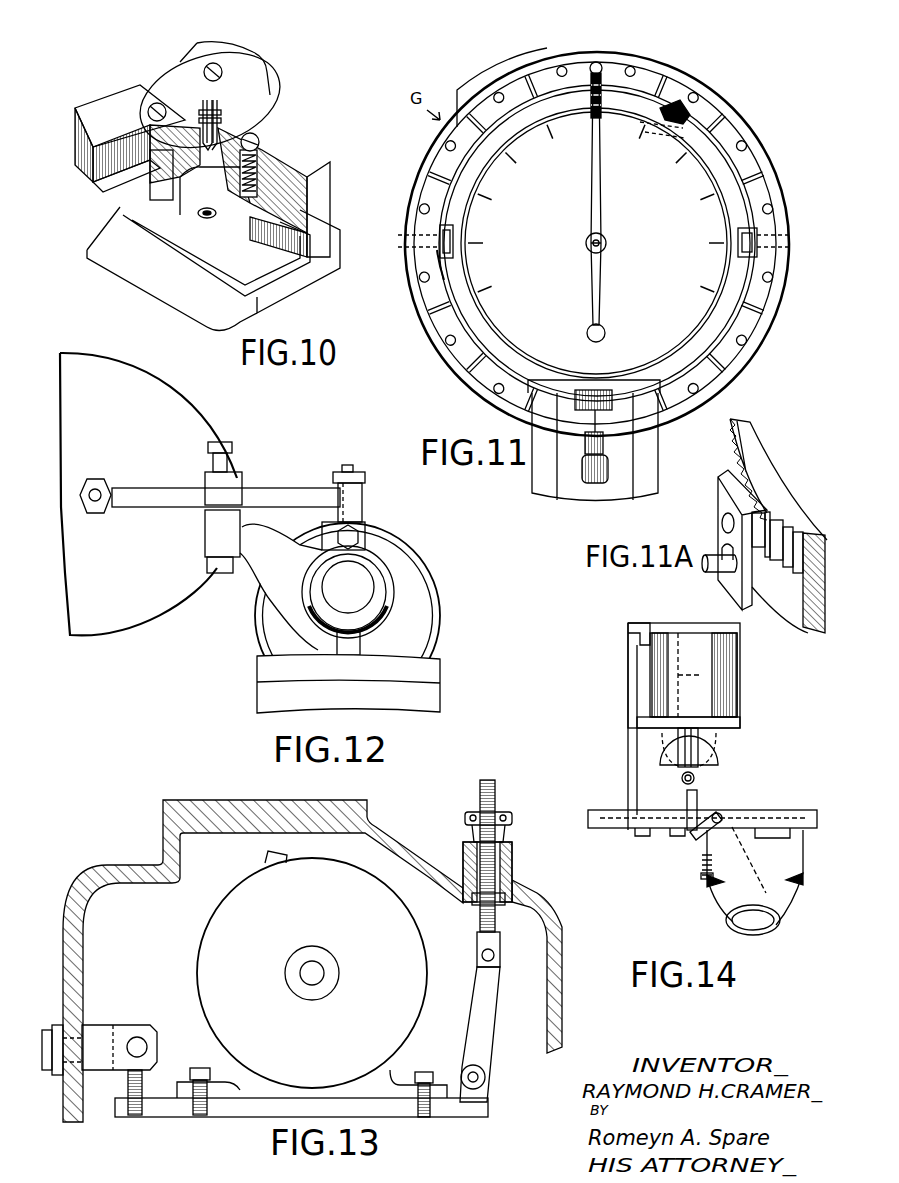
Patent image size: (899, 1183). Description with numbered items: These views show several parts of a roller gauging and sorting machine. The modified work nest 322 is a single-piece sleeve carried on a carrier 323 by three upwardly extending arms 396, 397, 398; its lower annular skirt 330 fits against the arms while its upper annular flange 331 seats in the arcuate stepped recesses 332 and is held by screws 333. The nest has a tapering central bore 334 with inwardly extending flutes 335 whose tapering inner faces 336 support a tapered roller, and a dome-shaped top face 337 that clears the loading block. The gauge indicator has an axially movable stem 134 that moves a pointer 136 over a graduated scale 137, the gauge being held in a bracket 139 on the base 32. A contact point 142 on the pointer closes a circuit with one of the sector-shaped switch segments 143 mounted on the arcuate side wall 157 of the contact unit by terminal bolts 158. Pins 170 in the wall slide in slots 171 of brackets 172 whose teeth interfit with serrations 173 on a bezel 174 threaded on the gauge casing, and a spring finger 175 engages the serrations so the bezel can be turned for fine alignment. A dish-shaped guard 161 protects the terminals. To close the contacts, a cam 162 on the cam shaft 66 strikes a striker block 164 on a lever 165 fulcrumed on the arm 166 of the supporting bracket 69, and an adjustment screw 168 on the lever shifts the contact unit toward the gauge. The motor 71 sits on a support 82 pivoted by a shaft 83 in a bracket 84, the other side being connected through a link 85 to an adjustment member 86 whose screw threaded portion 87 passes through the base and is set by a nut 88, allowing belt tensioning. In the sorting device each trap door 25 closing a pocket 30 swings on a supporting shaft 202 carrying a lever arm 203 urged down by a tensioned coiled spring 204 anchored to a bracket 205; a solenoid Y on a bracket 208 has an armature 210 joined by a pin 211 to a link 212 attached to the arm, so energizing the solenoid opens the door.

In FIG. 10, the work nest 322 is at (170, 88).
In FIG. 10, the carrier 323 is at (157, 287).
In FIG. 10, the lower annular skirt 330 is at (175, 190).
In FIG. 10, the upper annular flange 331 is at (160, 152).
In FIG. 10, the arcuate stepped recesses 332 is at (167, 160).
In FIG. 10, the screws 333 is at (259, 146).
In FIG. 10, the tapering central bore 334 is at (222, 108).
In FIG. 10, the flutes 335 is at (216, 112).
In FIG. 10, the tapering inner faces 336 is at (222, 118).
In FIG. 10, the top face 337 is at (143, 95).
In FIG. 10, the arm 396 is at (253, 60).
In FIG. 10, the arm 397 is at (97, 117).
In FIG. 10, the arm 398 is at (332, 197).
In FIG. 11, the stem 134 is at (590, 482).
In FIG. 11, the pointer 136 is at (590, 222).
In FIG. 11, the graduated scale 137 is at (596, 243).
In FIG. 11, the bracket 139 is at (533, 493).
In FIG. 11, the contact point 142 is at (595, 61).
In FIG. 11, the switch segments 143 is at (512, 83).
In FIG. 11, the arcuate side wall 157 is at (428, 329).
In FIG. 11, the terminal bolts 158 is at (633, 67).
In FIG. 11, the pins 170 is at (398, 240).
In FIG. 11A, the pins 170 is at (715, 558).
In FIG. 11A, the slots 171 is at (733, 587).
In FIG. 11, the brackets 172 is at (440, 226).
In FIG. 11A, the brackets 172 is at (722, 500).
In FIG. 11A, the serrations 173 is at (793, 527).
In FIG. 11, the bezel 174 is at (462, 263).
In FIG. 11A, the bezel 174 is at (747, 462).
In FIG. 11, the spring finger 175 is at (672, 105).
In FIG. 12, the guard 161 is at (187, 416).
In FIG. 12, the cam 162 is at (428, 612).
In FIG. 12, the striker block 164 is at (365, 537).
In FIG. 12, the lever 165 is at (275, 495).
In FIG. 12, the arm 166 is at (263, 546).
In FIG. 12, the adjustment screw 168 is at (100, 490).
In FIG. 12, the cam shaft 66 is at (348, 587).
In FIG. 12, the supporting bracket 69 is at (275, 673).
In FIG. 13, the base 32 is at (102, 877).
In FIG. 13, the motor 71 is at (220, 980).
In FIG. 13, the support 82 is at (183, 1117).
In FIG. 13, the shaft 83 is at (138, 1037).
In FIG. 13, the bracket 84 is at (112, 1037).
In FIG. 13, the link 85 is at (477, 1033).
In FIG. 13, the adjustment member 86 is at (485, 922).
In FIG. 13, the screw threaded portion 87 is at (513, 862).
In FIG. 13, the nut 88 is at (513, 818).
In FIG. 14, the solenoid Y is at (714, 688).
In FIG. 14, the bracket 208 is at (628, 762).
In FIG. 14, the armature 210 is at (697, 753).
In FIG. 14, the pin 211 is at (684, 781).
In FIG. 14, the link 212 is at (690, 812).
In FIG. 14, the supporting shaft 202 is at (722, 815).
In FIG. 14, the lever arm 203 is at (718, 810).
In FIG. 14, the tensioned coiled spring 204 is at (700, 862).
In FIG. 14, the bracket 205 is at (702, 877).
In FIG. 14, the trap door 25 is at (714, 902).
In FIG. 14, the pocket 30 is at (753, 920).